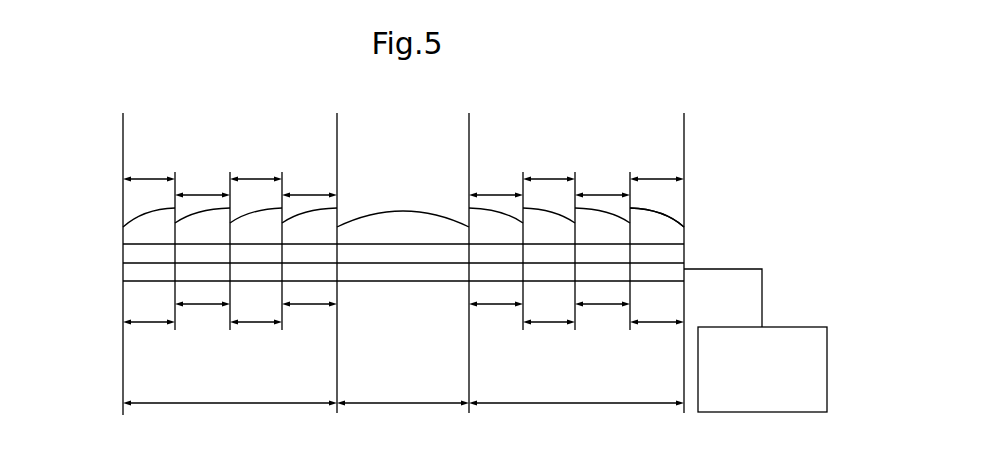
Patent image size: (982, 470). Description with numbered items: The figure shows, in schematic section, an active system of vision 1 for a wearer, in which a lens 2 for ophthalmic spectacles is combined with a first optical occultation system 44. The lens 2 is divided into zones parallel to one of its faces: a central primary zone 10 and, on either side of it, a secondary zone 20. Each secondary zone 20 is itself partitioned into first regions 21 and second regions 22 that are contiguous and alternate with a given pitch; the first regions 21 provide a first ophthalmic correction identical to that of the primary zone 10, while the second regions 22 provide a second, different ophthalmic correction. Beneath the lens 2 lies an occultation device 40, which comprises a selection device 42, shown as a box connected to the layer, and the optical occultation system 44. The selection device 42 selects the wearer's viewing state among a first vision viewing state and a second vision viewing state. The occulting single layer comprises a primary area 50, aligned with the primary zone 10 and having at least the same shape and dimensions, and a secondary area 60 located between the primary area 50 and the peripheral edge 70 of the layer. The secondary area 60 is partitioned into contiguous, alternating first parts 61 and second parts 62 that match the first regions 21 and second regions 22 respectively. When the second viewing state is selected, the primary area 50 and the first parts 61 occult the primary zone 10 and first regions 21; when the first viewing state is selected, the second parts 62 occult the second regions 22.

The active system of vision 1 is at (106, 182).
The lens 2 is at (675, 206).
The primary zone 10 is at (344, 169).
The secondary zone 20 is at (677, 123).
The first regions 21 is at (403, 169).
The second regions 22 is at (402, 184).
The occultation device 40 is at (140, 363).
The selection device 42 is at (755, 340).
The optical occultation system 44 is at (395, 292).
The primary area 50 is at (403, 416).
The secondary area 60 is at (403, 416).
The first parts 61 is at (403, 335).
The second parts 62 is at (402, 317).
The peripheral edge 70 is at (115, 273).